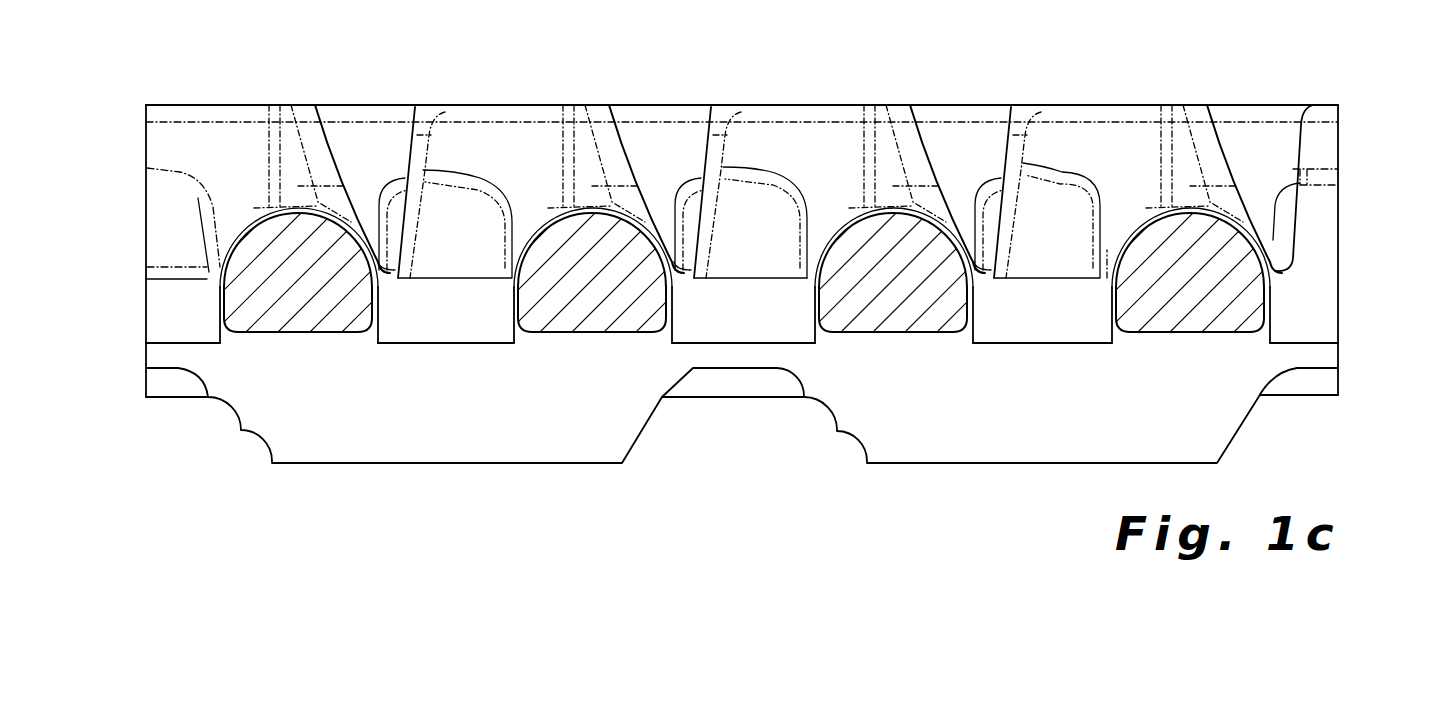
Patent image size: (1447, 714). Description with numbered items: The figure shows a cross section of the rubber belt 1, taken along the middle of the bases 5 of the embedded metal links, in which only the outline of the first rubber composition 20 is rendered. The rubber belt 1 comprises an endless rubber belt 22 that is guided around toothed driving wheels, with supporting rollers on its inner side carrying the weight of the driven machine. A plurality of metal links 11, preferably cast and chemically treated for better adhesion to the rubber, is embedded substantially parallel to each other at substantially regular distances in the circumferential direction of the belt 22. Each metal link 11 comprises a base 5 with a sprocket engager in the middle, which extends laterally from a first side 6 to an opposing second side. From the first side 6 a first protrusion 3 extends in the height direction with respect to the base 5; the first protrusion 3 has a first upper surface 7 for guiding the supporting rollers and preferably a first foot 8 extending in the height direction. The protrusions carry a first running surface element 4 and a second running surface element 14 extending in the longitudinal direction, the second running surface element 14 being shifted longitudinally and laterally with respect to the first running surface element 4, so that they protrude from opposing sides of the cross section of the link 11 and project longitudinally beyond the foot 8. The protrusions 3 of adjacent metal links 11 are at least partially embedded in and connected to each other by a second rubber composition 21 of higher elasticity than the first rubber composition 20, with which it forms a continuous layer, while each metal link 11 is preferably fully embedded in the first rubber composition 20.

The rubber belt 1 is at (1340, 130).
The first protrusion 3 is at (897, 155).
The first running surface element 4 is at (742, 107).
The base 5 is at (880, 333).
The first side 6 is at (828, 208).
The first upper surface 7 is at (868, 105).
The first foot 8 is at (855, 213).
The metal link 11 is at (930, 335).
The second running surface element 14 is at (958, 105).
The first rubber composition 20 is at (1075, 440).
The second rubber composition 21 is at (1028, 250).
The endless rubber belt 22 is at (1340, 187).